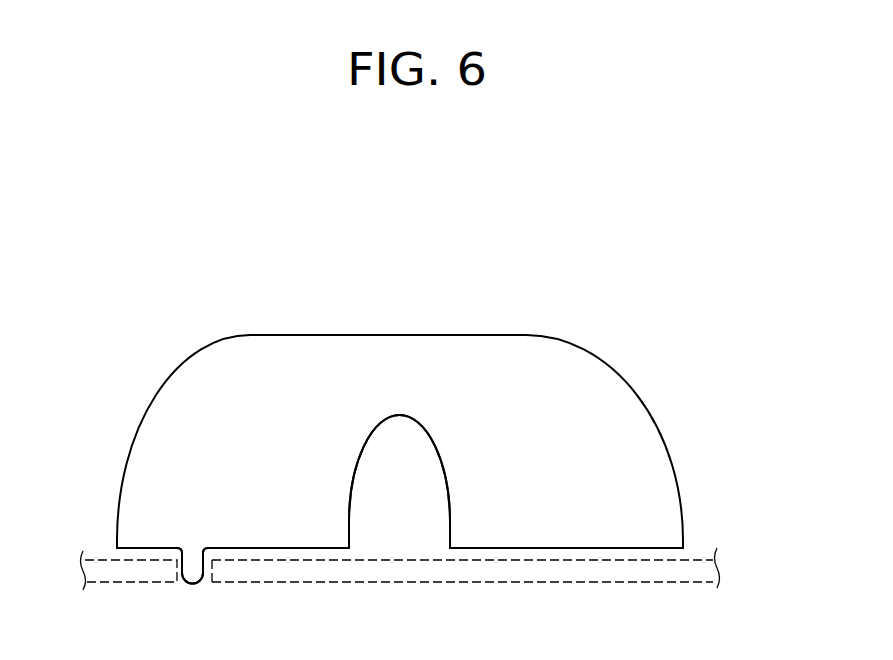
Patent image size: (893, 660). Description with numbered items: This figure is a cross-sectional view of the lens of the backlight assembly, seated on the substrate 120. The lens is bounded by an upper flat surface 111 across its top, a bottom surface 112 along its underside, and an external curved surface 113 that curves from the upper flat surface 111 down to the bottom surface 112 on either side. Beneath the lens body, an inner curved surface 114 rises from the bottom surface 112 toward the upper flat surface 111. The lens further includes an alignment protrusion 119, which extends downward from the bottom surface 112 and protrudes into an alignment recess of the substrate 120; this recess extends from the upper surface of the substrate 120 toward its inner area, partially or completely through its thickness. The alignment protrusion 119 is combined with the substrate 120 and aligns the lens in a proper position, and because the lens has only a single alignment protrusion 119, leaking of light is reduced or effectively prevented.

The upper flat surface 111 is at (483, 335).
The bottom surface 112 is at (494, 548).
The external curved surface 113 is at (665, 437).
The inner curved surface 114 is at (429, 431).
The alignment protrusion 119 is at (198, 584).
The substrate 120 is at (117, 575).